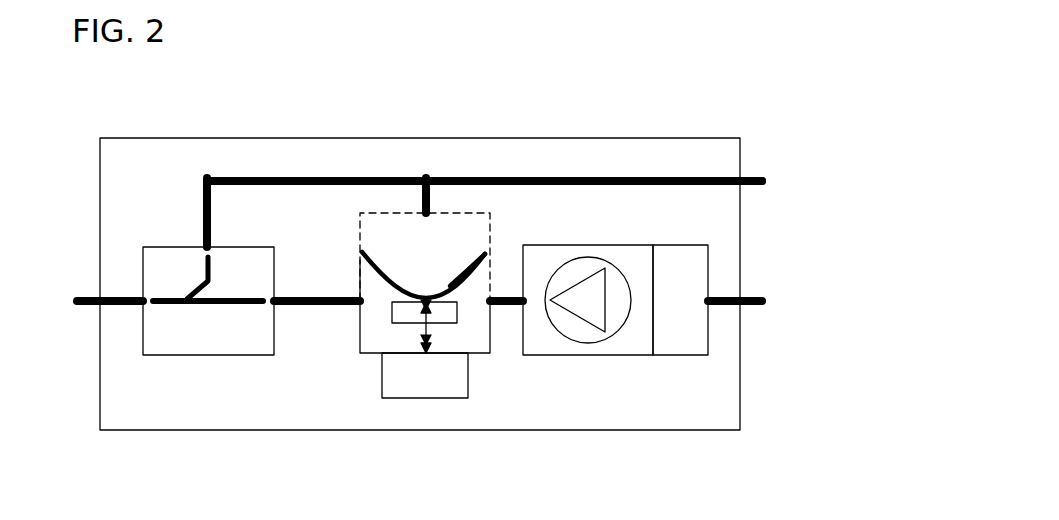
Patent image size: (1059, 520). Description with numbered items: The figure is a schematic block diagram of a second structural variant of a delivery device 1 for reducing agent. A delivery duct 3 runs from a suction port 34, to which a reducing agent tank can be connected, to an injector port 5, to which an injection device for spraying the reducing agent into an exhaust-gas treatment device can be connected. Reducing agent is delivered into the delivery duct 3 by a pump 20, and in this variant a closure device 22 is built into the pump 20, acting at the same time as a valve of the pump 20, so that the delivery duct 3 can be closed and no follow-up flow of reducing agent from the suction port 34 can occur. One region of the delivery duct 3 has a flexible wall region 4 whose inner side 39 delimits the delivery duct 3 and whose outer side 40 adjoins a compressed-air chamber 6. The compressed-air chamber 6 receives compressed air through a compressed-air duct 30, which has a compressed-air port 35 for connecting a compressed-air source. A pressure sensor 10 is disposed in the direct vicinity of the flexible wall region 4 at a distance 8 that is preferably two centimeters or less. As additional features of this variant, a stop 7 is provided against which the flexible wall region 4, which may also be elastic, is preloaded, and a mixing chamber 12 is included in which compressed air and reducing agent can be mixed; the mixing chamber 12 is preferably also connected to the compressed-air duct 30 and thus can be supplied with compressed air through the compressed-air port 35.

The delivery device 1 is at (96, 122).
The delivery duct 3 is at (356, 290).
The flexible wall region 4 is at (362, 252).
The injector port 5 is at (90, 298).
The compressed-air chamber 6 is at (430, 232).
The stop 7 is at (457, 311).
The distance 8 is at (422, 329).
The pressure sensor 10 is at (427, 398).
The mixing chamber 12 is at (143, 247).
The pump 20 is at (612, 355).
The closure device 22 is at (677, 355).
The compressed-air duct 30 is at (556, 177).
The suction port 34 is at (752, 296).
The compressed-air port 35 is at (766, 178).
The inner side 39 is at (470, 280).
The outer side 40 is at (471, 261).